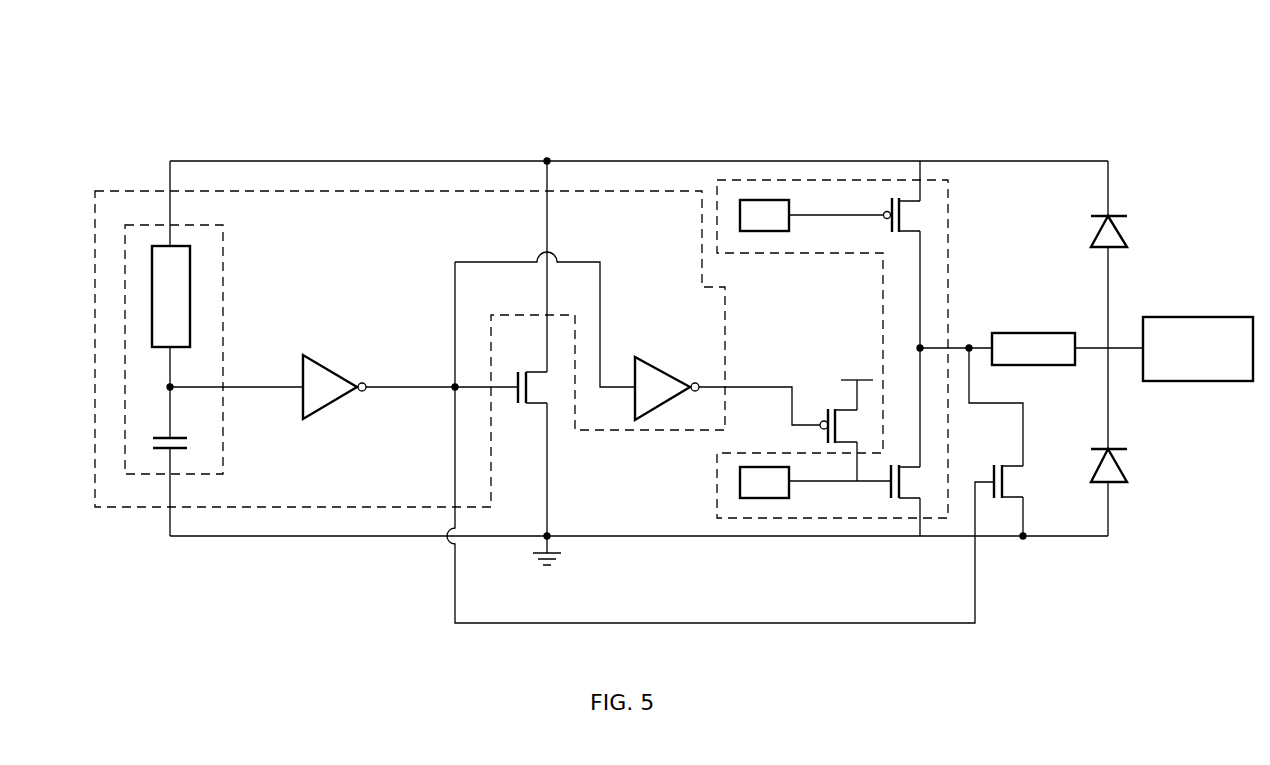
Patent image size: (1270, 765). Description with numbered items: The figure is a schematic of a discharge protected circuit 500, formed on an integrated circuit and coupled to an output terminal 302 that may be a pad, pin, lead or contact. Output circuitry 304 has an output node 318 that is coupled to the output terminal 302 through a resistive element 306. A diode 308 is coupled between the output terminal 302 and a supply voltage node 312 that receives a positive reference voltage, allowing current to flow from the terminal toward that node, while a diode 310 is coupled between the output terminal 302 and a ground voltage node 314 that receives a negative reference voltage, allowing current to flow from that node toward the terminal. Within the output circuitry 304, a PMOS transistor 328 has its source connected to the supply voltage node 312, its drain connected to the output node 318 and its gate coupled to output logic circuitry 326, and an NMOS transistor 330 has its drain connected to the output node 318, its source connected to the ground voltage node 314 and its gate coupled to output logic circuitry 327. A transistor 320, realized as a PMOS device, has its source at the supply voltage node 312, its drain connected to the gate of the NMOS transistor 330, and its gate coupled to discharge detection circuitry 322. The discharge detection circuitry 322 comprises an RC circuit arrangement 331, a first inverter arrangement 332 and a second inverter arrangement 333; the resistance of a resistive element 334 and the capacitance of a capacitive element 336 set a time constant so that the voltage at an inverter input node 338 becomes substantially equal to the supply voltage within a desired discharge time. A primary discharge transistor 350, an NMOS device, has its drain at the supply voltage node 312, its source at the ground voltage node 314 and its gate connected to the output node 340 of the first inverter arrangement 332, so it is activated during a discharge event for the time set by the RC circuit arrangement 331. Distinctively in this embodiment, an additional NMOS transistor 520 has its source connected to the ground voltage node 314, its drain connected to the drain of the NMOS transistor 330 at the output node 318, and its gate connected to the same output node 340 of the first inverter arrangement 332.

The discharge protected circuit 500 is at (990, 96).
The output terminal 302 is at (1197, 317).
The output circuitry 304 is at (830, 519).
The resistive element 306 is at (1040, 333).
The diode 308 is at (1124, 238).
The diode 310 is at (1124, 470).
The supply voltage node 312 is at (548, 162).
The ground voltage node 314 is at (548, 536).
The output node 318 is at (922, 348).
The transistor 320 is at (862, 425).
The discharge detection circuitry 322 is at (385, 191).
The output logic circuitry 326 is at (765, 232).
The output logic circuitry 327 is at (740, 482).
The PMOS transistor 328 is at (924, 213).
The NMOS transistor 330 is at (917, 484).
The RC circuit arrangement 331 is at (125, 440).
The first inverter arrangement 332 is at (325, 370).
The second inverter arrangement 333 is at (658, 366).
The resistive element 334 is at (152, 283).
The capacitive element 336 is at (160, 450).
The inverter input node 338 is at (170, 387).
The output node of the first inverter arrangement 340 is at (455, 390).
The primary discharge transistor 350 is at (551, 392).
The NMOS transistor 520 is at (1026, 483).